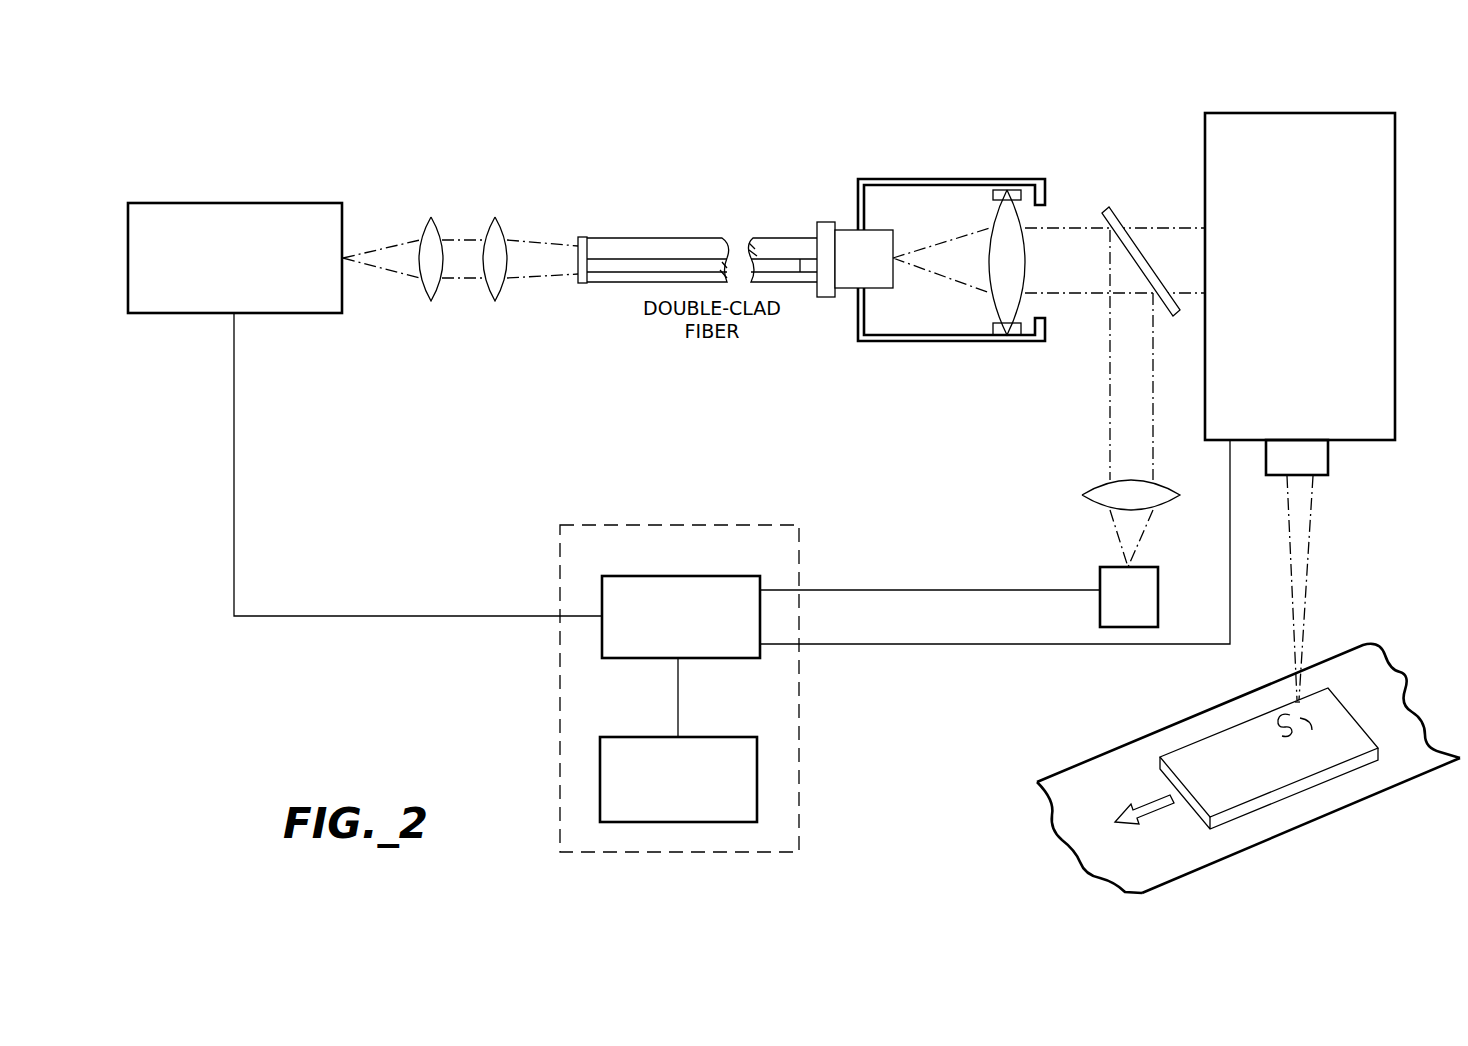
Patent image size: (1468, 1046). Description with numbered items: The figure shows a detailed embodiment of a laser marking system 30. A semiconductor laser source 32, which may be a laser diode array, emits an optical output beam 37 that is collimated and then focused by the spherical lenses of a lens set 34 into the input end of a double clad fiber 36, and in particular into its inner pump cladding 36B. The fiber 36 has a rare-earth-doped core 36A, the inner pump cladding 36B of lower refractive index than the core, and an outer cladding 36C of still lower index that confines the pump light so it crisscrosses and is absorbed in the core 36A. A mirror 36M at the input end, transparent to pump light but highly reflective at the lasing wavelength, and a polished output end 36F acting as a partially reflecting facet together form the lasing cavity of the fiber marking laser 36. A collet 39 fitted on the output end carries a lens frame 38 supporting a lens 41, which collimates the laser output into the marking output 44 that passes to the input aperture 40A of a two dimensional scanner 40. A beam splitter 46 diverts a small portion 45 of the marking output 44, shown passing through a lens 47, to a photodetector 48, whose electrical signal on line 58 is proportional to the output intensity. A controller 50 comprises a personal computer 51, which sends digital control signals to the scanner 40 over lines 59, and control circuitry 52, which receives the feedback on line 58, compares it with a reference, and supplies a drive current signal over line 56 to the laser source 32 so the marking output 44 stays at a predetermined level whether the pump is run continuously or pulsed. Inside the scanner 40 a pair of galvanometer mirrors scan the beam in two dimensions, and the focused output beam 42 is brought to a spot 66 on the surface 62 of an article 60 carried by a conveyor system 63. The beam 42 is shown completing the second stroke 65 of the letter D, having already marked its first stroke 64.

The laser marking system 30 is at (694, 102).
The semiconductor laser source 32 is at (241, 203).
The lens set 34 is at (522, 212).
The double clad fiber 36 is at (662, 226).
The core 36A is at (660, 259).
The inner pump cladding 36B is at (801, 272).
The outer cladding 36C is at (800, 238).
The output end 36F is at (893, 257).
The mirror 36M is at (586, 237).
The optical output beam 37 is at (532, 240).
The lens frame 38 is at (910, 179).
The collet 39 is at (853, 222).
The two dimensional scanner 40 is at (1297, 113).
The input aperture 40A is at (1205, 258).
The lens 41 is at (1002, 200).
The focused output beam 42 is at (1312, 530).
The marking output 44 is at (1068, 228).
The reflected beam 45 is at (1108, 460).
The beam splitter 46 is at (1145, 257).
The focusing lens 47 is at (1092, 487).
The photodetector 48 is at (1158, 600).
The controller 50 is at (683, 525).
The personal computer 51 is at (696, 737).
The control circuitry 52 is at (680, 576).
The laser control line 56 is at (410, 616).
The line 58 is at (955, 590).
The lines 59 is at (850, 644).
The article 60 is at (1415, 697).
The surface 62 is at (1195, 752).
The conveyor system 63 is at (1108, 758).
The first stroke 64 is at (1300, 718).
The second stroke 65 is at (1283, 714).
The spot 66 is at (1298, 712).